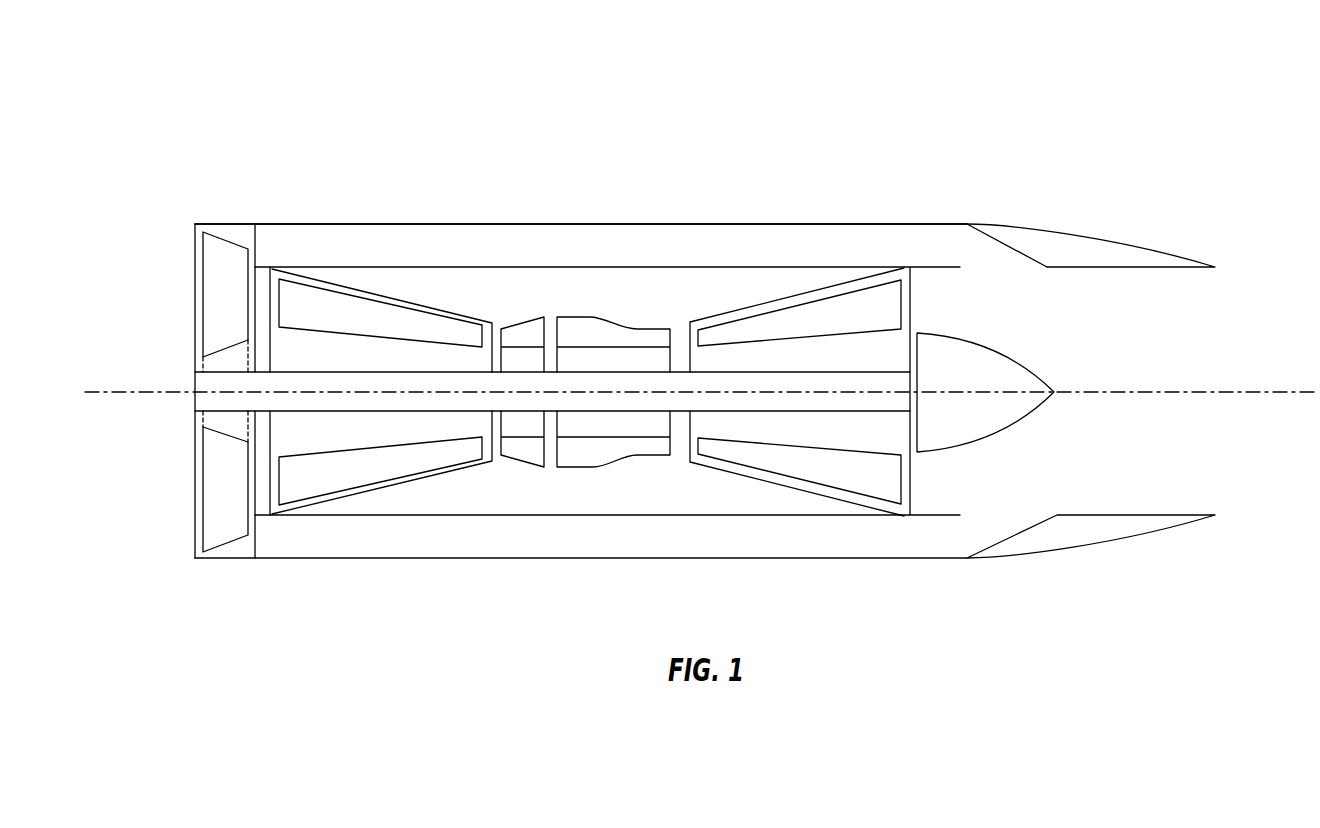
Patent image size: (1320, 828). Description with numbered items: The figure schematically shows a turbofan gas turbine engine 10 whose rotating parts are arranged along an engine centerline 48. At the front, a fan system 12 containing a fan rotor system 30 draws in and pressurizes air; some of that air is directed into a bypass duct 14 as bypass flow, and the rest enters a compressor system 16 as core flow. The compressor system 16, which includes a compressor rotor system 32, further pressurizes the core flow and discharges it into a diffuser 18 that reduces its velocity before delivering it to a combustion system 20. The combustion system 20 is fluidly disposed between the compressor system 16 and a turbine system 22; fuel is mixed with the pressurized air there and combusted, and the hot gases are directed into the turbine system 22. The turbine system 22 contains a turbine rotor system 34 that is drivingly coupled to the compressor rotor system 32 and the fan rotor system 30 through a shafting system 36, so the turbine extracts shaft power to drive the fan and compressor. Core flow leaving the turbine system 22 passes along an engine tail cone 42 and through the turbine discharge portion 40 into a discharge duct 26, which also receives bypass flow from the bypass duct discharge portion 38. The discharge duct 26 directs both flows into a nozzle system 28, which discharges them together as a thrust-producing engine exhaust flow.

The gas turbine engine 10 is at (1046, 100).
The fan system 12 is at (195, 525).
The bypass duct 14 is at (323, 543).
The compressor system 16 is at (443, 474).
The diffuser 18 is at (523, 323).
The combustion system 20 is at (605, 316).
The turbine system 22 is at (739, 476).
The discharge duct 26 is at (1045, 277).
The nozzle system 28 is at (1143, 513).
The fan rotor system 30 is at (225, 543).
The compressor rotor system 32 is at (415, 310).
The turbine rotor system 34 is at (763, 312).
The shafting system 36 is at (680, 413).
The bypass duct discharge portion 38 is at (993, 247).
The discharge portion of turbine system 40 is at (912, 468).
The engine tail cone 42 is at (1035, 412).
The engine centerline 48 is at (152, 393).